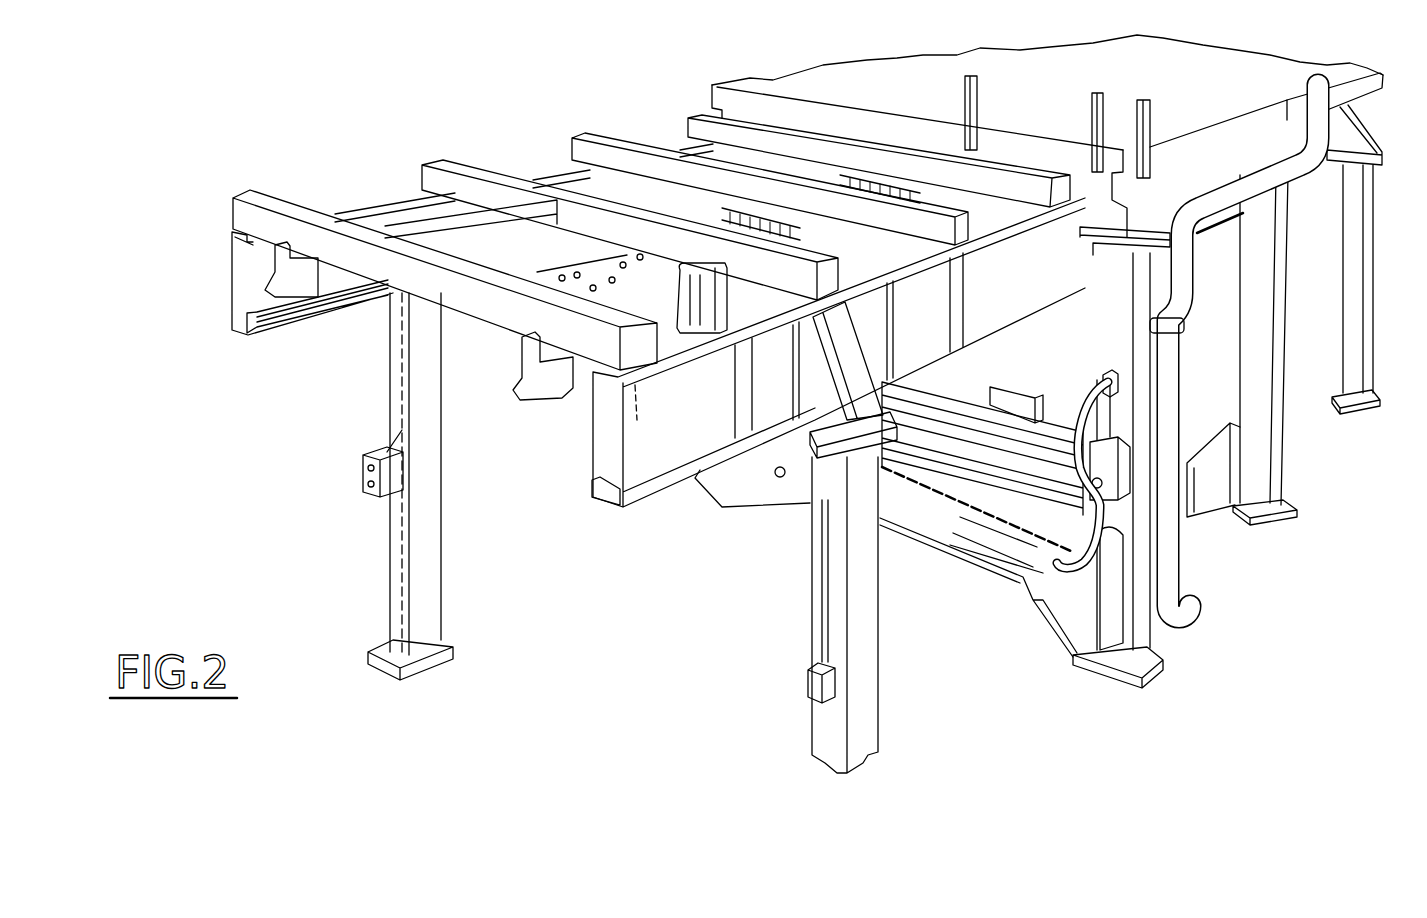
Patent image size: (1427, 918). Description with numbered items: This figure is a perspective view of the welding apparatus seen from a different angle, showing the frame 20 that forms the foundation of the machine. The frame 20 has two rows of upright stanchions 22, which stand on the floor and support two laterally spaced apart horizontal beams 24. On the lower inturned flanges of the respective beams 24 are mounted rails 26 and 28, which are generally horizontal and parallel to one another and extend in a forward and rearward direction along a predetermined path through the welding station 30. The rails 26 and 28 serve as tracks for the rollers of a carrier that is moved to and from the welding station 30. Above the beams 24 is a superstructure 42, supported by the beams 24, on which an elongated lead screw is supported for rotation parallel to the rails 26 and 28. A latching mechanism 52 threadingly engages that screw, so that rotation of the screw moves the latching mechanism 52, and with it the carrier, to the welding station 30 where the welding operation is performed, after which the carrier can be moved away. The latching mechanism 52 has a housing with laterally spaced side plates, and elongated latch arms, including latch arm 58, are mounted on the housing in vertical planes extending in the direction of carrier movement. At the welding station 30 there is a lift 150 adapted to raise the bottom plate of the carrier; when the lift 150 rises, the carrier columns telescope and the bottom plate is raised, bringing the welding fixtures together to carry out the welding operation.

The frame 20 is at (1366, 143).
The upright stanchions 22 is at (433, 548).
The horizontal beams 24 is at (243, 278).
The rail 26 is at (600, 476).
The rail 28 is at (285, 317).
The welding station 30 is at (1065, 347).
The superstructure 42 is at (620, 157).
The latching mechanism 52 is at (600, 262).
The latch arm 58 is at (618, 280).
The lift 150 is at (1070, 386).